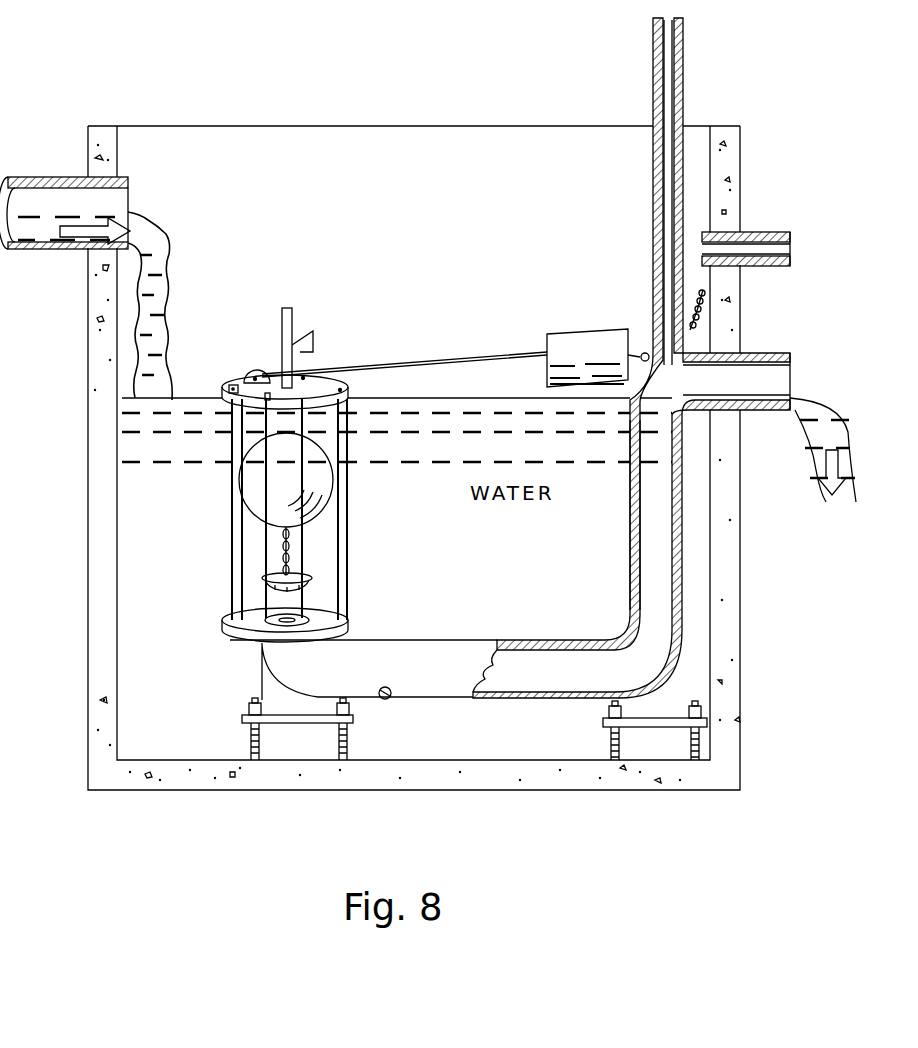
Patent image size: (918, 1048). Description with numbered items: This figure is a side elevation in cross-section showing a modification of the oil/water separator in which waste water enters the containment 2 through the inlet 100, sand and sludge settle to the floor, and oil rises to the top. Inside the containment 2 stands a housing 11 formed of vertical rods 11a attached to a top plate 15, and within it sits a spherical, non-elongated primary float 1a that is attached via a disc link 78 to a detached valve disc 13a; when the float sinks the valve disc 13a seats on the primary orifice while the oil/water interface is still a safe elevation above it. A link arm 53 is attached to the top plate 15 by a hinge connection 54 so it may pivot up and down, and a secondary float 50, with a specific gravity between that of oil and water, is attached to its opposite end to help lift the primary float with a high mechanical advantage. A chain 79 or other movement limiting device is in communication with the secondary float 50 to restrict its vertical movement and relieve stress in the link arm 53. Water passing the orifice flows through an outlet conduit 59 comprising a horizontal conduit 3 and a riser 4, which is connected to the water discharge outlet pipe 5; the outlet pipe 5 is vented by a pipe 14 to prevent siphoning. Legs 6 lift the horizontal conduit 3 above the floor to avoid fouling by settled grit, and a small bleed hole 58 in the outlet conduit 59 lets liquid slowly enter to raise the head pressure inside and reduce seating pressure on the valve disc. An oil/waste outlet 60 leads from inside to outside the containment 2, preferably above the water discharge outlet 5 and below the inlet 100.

The waste water inlet 100 is at (72, 177).
The vent pipe 14 is at (683, 56).
The oil/waste outlet 60 is at (790, 252).
The chain 79 is at (648, 340).
The secondary float 50 is at (578, 350).
The link arm 53 is at (438, 365).
The hinge connection 54 is at (247, 372).
The top plate 15 is at (228, 388).
The housing 11 is at (298, 475).
The vertical rods 11a is at (342, 542).
The spherical primary float 1a is at (300, 520).
The detached valve disc 13a is at (310, 593).
The disc link 78 is at (275, 552).
The containment 2 is at (88, 608).
The outlet conduit 59 is at (612, 597).
The riser 4 is at (668, 606).
The water discharge outlet pipe 5 is at (752, 410).
The bleed hole 58 is at (387, 699).
The horizontal conduit 3 is at (364, 692).
The legs 6 is at (352, 745).